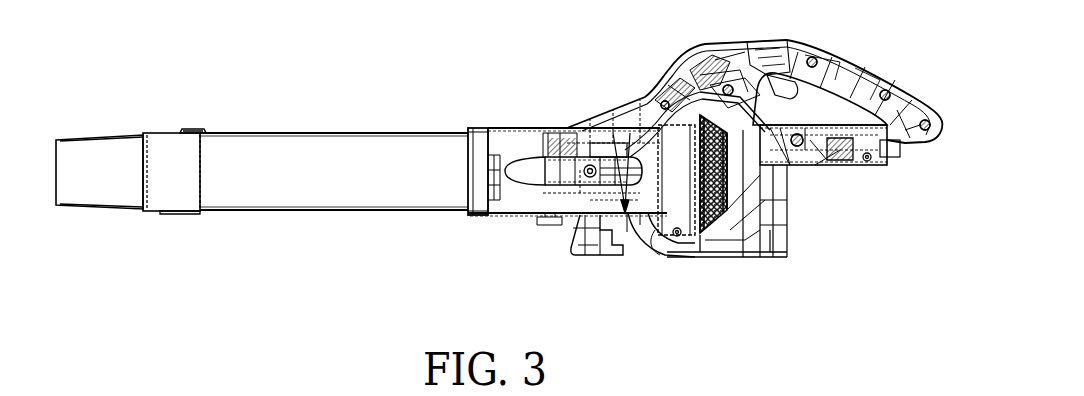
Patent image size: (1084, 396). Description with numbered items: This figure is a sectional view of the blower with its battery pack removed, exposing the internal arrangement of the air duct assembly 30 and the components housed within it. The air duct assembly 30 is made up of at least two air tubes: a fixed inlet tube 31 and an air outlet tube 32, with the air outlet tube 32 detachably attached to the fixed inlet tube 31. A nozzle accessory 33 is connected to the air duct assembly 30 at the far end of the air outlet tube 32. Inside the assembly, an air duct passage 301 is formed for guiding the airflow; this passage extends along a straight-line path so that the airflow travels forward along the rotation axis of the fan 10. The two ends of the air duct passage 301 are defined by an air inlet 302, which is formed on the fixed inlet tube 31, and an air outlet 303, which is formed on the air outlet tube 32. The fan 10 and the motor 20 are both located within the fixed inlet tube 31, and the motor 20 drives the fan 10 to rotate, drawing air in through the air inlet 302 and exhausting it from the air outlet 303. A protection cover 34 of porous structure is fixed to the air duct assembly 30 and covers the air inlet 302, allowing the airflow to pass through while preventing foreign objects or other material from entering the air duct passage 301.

The fan 10 is at (667, 258).
The motor 20 is at (573, 113).
The air duct assembly 30 is at (627, 134).
The fixed inlet tube 31 is at (573, 274).
The air outlet tube 32 is at (334, 113).
The nozzle accessory 33 is at (99, 113).
The protection cover 34 is at (821, 191).
The air duct passage 301 is at (367, 118).
The air inlet 302 is at (740, 210).
The air outlet 303 is at (196, 124).